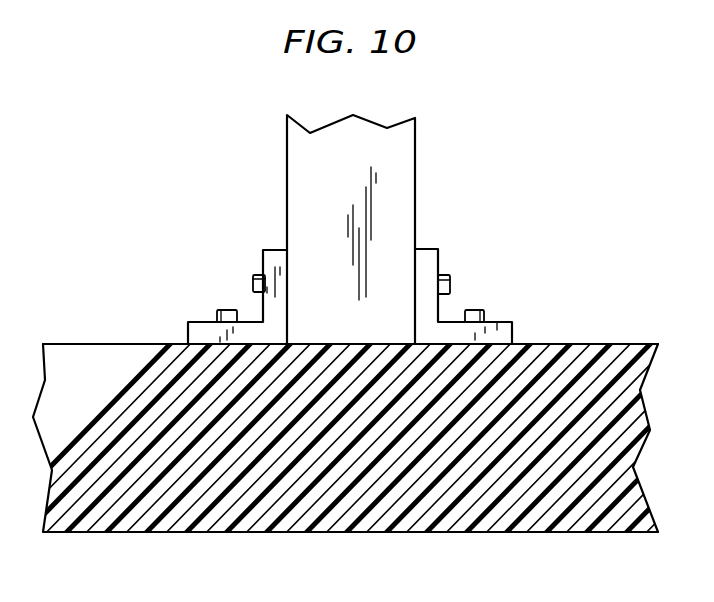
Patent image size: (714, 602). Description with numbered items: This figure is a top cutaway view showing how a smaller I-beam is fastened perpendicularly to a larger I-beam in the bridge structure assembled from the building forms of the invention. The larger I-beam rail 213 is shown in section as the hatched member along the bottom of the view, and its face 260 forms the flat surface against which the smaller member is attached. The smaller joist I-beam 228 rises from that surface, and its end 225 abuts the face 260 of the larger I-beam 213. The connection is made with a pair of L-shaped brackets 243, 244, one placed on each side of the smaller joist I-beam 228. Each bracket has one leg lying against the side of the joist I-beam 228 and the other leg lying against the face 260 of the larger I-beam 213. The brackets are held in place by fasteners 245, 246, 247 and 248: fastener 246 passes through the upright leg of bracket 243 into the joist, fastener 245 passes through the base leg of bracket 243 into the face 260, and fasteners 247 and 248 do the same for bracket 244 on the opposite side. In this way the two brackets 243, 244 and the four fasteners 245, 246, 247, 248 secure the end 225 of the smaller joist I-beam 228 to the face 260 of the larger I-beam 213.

The smaller joist I-beam 228 is at (340, 132).
The end of smaller joist I-beam 225 is at (378, 303).
The L-shaped bracket 243 is at (263, 250).
The L-shaped bracket 244 is at (438, 249).
The fastener 245 is at (218, 313).
The fastener 246 is at (253, 279).
The fastener 247 is at (450, 281).
The fastener 248 is at (485, 312).
The face of larger I-beam 260 is at (615, 343).
The larger I-beam rail 213 is at (365, 515).